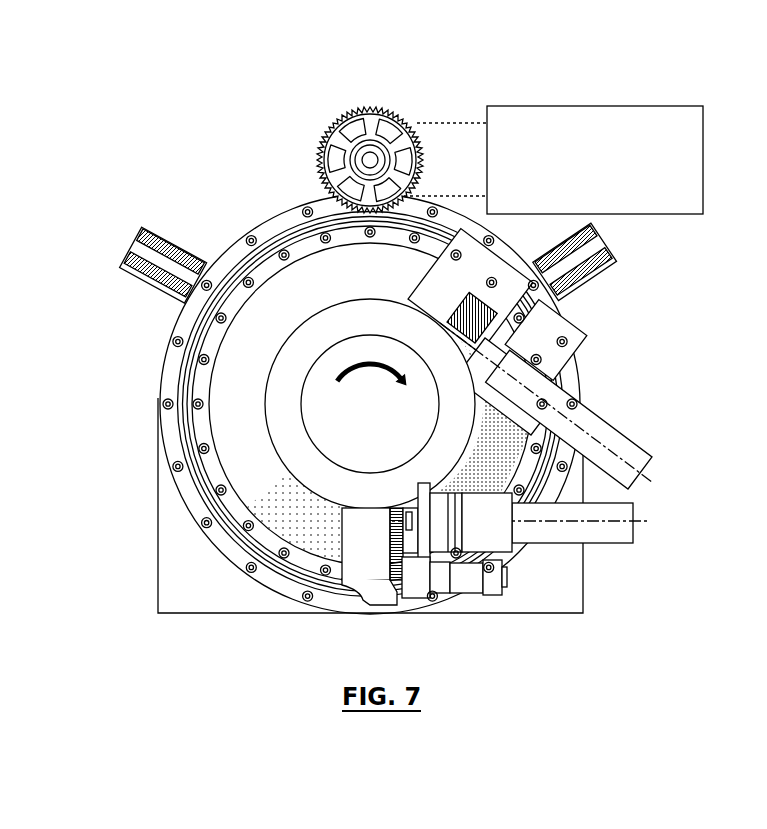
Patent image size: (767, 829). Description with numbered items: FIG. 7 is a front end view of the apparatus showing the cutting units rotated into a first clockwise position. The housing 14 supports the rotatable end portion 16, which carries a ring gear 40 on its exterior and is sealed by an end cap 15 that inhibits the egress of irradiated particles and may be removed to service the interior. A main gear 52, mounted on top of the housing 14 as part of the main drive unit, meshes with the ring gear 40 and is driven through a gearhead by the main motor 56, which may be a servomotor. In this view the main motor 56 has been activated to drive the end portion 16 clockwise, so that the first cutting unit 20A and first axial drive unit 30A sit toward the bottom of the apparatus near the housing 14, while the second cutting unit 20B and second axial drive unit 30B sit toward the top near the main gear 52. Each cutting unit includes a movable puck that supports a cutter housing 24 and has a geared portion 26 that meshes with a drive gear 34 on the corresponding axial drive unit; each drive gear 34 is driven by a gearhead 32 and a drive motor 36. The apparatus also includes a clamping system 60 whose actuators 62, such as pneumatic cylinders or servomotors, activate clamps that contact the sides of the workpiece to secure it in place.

The housing 14 is at (168, 558).
The end cap 15 is at (350, 430).
The end portion 16 is at (283, 459).
The first cutting unit 20A is at (460, 607).
The second cutting unit 20B is at (581, 302).
The cutter housing 24 is at (474, 593).
The geared portion 26 is at (387, 558).
The first axial drive unit 30A is at (546, 565).
The second axial drive unit 30B is at (626, 396).
The gearhead 32 is at (482, 493).
The drive gear 34 is at (383, 506).
The drive motor 36 is at (640, 452).
The ring gear 40 is at (287, 232).
The main gear 52 is at (377, 107).
The main motor 56 is at (553, 106).
The clamping system 60 is at (402, 269).
The actuators 62 is at (162, 233).